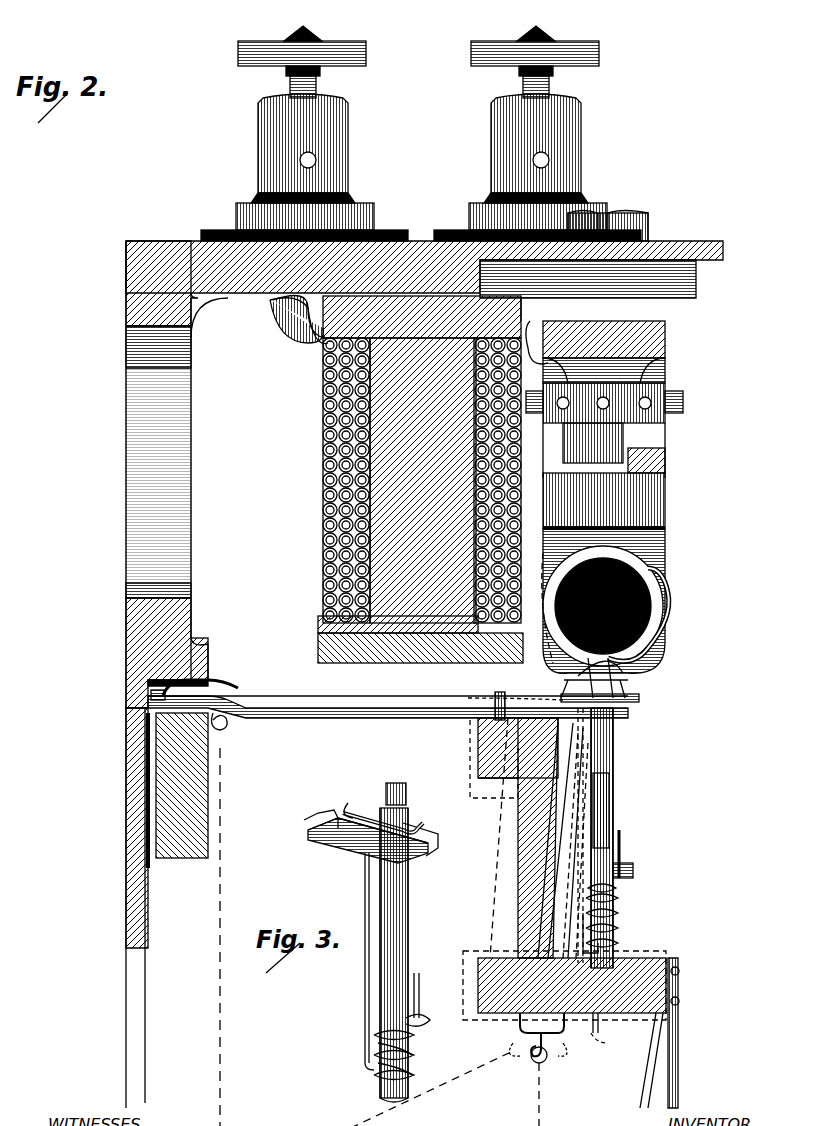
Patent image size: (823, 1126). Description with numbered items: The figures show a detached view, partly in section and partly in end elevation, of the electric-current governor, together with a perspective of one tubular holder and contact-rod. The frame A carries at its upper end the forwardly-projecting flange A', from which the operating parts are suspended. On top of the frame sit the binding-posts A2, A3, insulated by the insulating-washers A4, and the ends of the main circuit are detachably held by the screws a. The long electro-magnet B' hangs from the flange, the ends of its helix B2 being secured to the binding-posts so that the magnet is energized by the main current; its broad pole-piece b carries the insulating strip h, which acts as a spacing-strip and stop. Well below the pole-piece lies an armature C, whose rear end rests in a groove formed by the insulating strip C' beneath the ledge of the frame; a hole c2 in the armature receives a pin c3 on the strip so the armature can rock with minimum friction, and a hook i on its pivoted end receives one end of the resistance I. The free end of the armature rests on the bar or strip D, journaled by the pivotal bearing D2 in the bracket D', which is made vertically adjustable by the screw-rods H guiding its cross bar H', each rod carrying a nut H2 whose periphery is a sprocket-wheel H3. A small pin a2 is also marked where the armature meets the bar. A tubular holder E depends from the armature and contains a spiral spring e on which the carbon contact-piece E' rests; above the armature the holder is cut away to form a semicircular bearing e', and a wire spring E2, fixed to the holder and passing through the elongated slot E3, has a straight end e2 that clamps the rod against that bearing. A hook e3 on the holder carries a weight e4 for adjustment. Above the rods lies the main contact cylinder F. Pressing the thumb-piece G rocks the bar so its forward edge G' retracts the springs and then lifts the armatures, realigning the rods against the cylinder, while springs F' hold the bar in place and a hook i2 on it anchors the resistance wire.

In FIG. 2, the screw a is at (413, 29).
In FIG. 2, the top portion or forwardly-projecting flange A' is at (424, 255).
In FIG. 2, the binding-post A2 is at (498, 130).
In FIG. 2, the binding-post A3 is at (322, 128).
In FIG. 2, the insulating-washer A4 is at (195, 220).
In FIG. 2, the frame A is at (162, 674).
In FIG. 2, the electro-magnet B' is at (422, 459).
In FIG. 2, the helix B2 is at (406, 480).
In FIG. 2, the pole-piece b is at (310, 615).
In FIG. 2, the insulating strip h is at (420, 658).
In FIG. 2, the cross bar H' is at (611, 331).
In FIG. 2, the sprocket-wheel H3 is at (660, 383).
In FIG. 2, the nut H2 is at (548, 432).
In FIG. 2, the screw-rod H is at (613, 480).
In FIG. 2, the bracket D' is at (666, 463).
In FIG. 2, the main contact bar or cylinder F is at (616, 600).
In FIG. 2, the contact-piece or rod E' is at (623, 708).
In FIG. 3, the contact-piece or rod E' is at (387, 812).
In FIG. 2, the straight end of spring e2 is at (610, 690).
In FIG. 3, the straight end of spring e2 is at (415, 822).
In FIG. 2, the armature C is at (388, 715).
In FIG. 2, the hole or depression c2 is at (200, 655).
In FIG. 2, the pin or stud c3 is at (200, 684).
In FIG. 2, the hook i is at (225, 726).
In FIG. 2, the strip C' is at (198, 790).
In FIG. 2, the resistance I is at (220, 937).
In FIG. 2, the pin a2 is at (482, 700).
In FIG. 2, the upper and forward edge G' is at (514, 758).
In FIG. 2, the bar or strip D is at (534, 838).
In FIG. 2, the pivotal bearing D2 is at (505, 842).
In FIG. 2, the tubular holder E is at (606, 838).
In FIG. 3, the tubular holder E is at (397, 955).
In FIG. 2, the spiral spring e is at (632, 854).
In FIG. 2, the hook e3 is at (625, 858).
In FIG. 3, the hook e3 is at (427, 995).
In FIG. 2, the weight e4 is at (610, 878).
In FIG. 3, the weight e4 is at (427, 1026).
In FIG. 2, the wire spring E2 is at (608, 920).
In FIG. 3, the wire spring E2 is at (345, 1037).
In FIG. 2, the thumb-piece G is at (583, 1029).
In FIG. 2, the spring F' is at (605, 1035).
In FIG. 2, the hook i2 is at (452, 1069).
In FIG. 3, the elongated slot E3 is at (320, 835).
In FIG. 3, the semicircular bearing e' is at (383, 799).